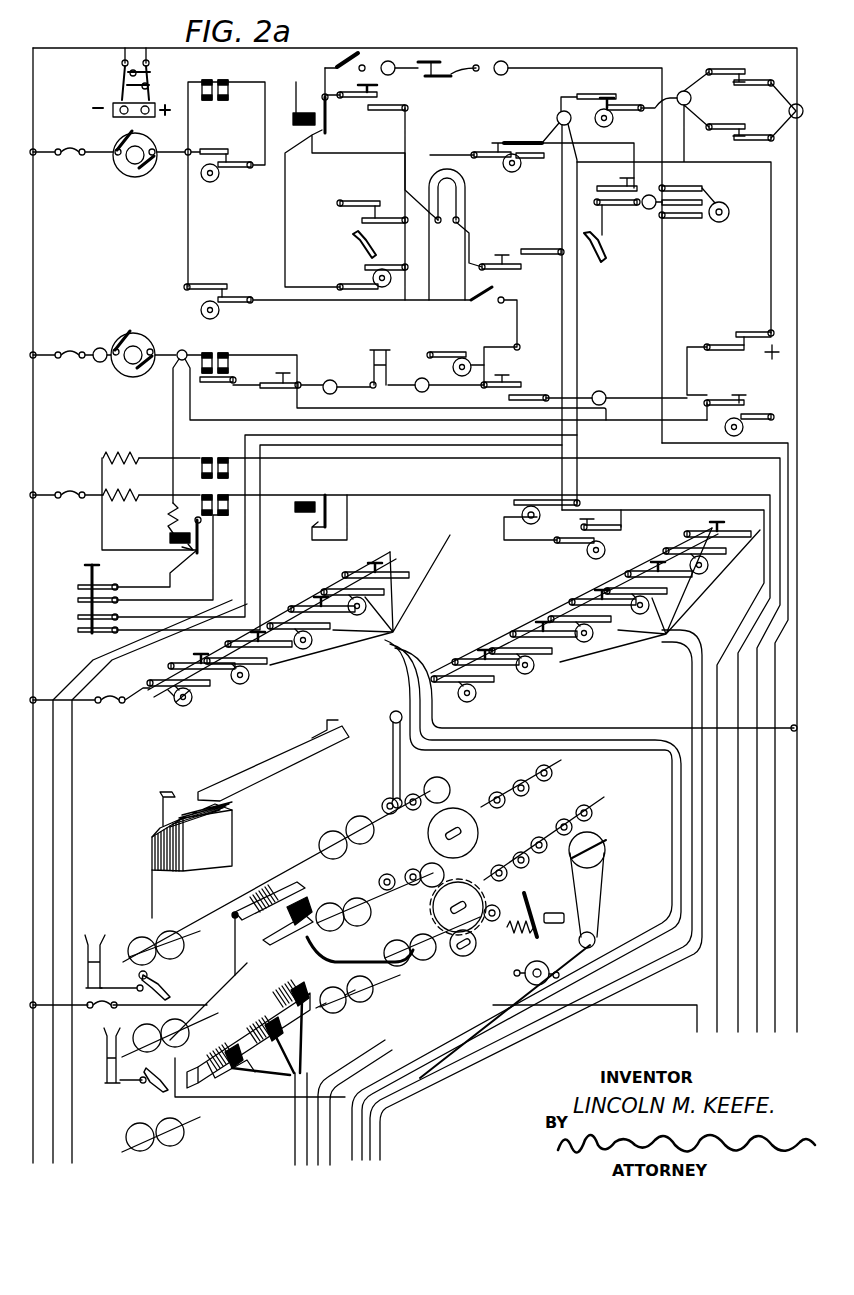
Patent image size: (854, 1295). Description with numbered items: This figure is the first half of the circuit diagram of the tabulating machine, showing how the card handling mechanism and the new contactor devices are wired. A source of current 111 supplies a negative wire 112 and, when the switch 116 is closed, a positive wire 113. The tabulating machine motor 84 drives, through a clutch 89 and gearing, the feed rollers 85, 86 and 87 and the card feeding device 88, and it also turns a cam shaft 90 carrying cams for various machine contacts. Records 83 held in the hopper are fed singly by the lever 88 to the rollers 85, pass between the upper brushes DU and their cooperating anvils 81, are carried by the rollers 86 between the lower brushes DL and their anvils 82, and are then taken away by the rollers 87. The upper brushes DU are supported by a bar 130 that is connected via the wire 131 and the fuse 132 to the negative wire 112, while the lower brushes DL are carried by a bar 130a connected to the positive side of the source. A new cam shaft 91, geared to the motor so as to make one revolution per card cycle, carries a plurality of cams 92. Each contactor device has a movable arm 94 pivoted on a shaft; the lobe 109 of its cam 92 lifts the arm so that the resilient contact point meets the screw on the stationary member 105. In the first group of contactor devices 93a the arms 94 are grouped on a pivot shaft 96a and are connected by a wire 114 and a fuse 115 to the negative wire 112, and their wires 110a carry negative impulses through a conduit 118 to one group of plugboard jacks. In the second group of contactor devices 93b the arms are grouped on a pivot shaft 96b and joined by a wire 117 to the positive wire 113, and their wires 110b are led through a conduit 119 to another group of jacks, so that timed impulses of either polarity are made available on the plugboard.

The negative wire 112 is at (78, 48).
The positive wire 113 is at (175, 48).
The switch 116 is at (124, 82).
The source of current 111 is at (124, 115).
The tabulating machine motor 84 is at (120, 165).
The first group of contactor devices 93a is at (190, 683).
The second group of contactor devices 93b is at (472, 678).
The pivot shaft 96a is at (265, 645).
The pivot shaft 96b is at (585, 612).
The wires 110a is at (428, 582).
The wires 110b is at (697, 590).
The stationary member 105 is at (250, 668).
The fuse 115 is at (142, 688).
The wire 114 is at (130, 703).
The movable arm 94 is at (172, 697).
The cam 92 is at (192, 700).
The cam shaft 91 is at (183, 706).
The lobe 109 is at (178, 706).
The conduit 118 is at (408, 688).
The wire 117 is at (576, 735).
The conduit 119 is at (692, 708).
The card feeding device 88 is at (390, 735).
The records 83 is at (150, 862).
The feed rollers 85 is at (335, 850).
The bar 130 is at (238, 912).
The anvils 81 is at (305, 900).
The feed rollers 86 is at (355, 928).
The wire 131 is at (203, 995).
The fuse 132 is at (100, 1010).
The anvils 82 is at (282, 978).
The bar 130a is at (345, 970).
The feed rollers 87 is at (340, 1012).
The cam shaft 90 is at (490, 876).
The clutch 89 is at (530, 890).